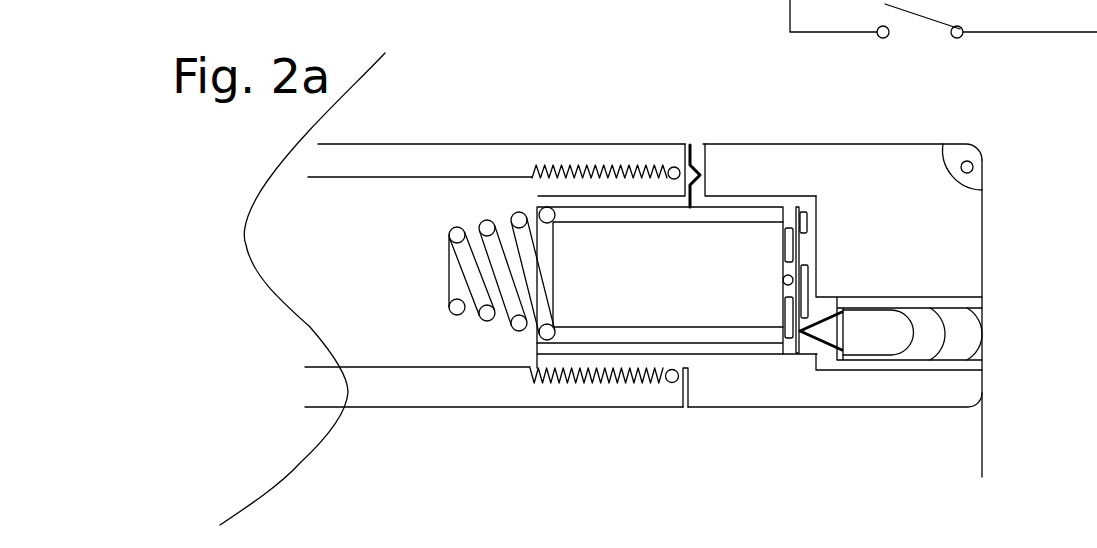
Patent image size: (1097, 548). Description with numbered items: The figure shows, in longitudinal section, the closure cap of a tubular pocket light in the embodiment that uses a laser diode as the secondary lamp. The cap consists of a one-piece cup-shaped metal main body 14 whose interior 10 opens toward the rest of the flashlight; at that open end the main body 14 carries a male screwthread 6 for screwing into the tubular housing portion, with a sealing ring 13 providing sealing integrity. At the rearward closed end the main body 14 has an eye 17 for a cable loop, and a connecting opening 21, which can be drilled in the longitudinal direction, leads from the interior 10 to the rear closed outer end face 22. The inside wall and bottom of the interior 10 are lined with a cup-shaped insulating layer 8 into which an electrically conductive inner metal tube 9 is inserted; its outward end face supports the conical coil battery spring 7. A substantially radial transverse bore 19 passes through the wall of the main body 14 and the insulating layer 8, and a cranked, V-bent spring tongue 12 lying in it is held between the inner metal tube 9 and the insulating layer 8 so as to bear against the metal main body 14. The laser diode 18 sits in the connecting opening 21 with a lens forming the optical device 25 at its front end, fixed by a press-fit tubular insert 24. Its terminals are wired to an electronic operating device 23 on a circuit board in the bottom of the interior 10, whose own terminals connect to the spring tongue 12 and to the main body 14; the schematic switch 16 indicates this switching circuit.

The male screwthread 6 is at (552, 175).
The battery spring 7 is at (450, 236).
The insulating layer 8 is at (540, 360).
The inner metal tube 9 is at (602, 337).
The interior 10 is at (668, 274).
The spring tongue 12 is at (693, 147).
The sealing ring 13 is at (672, 168).
The main body 14 is at (800, 145).
The switch 16 is at (943, 31).
The eye 17 is at (975, 168).
The laser diode 18 is at (868, 347).
The transverse bore 19 is at (698, 147).
The connecting opening 21 is at (918, 345).
The rear closed outer end face 22 is at (985, 275).
The electronic operating device 23 is at (797, 357).
The tubular insert 24 is at (972, 365).
The optical device 25 is at (972, 333).